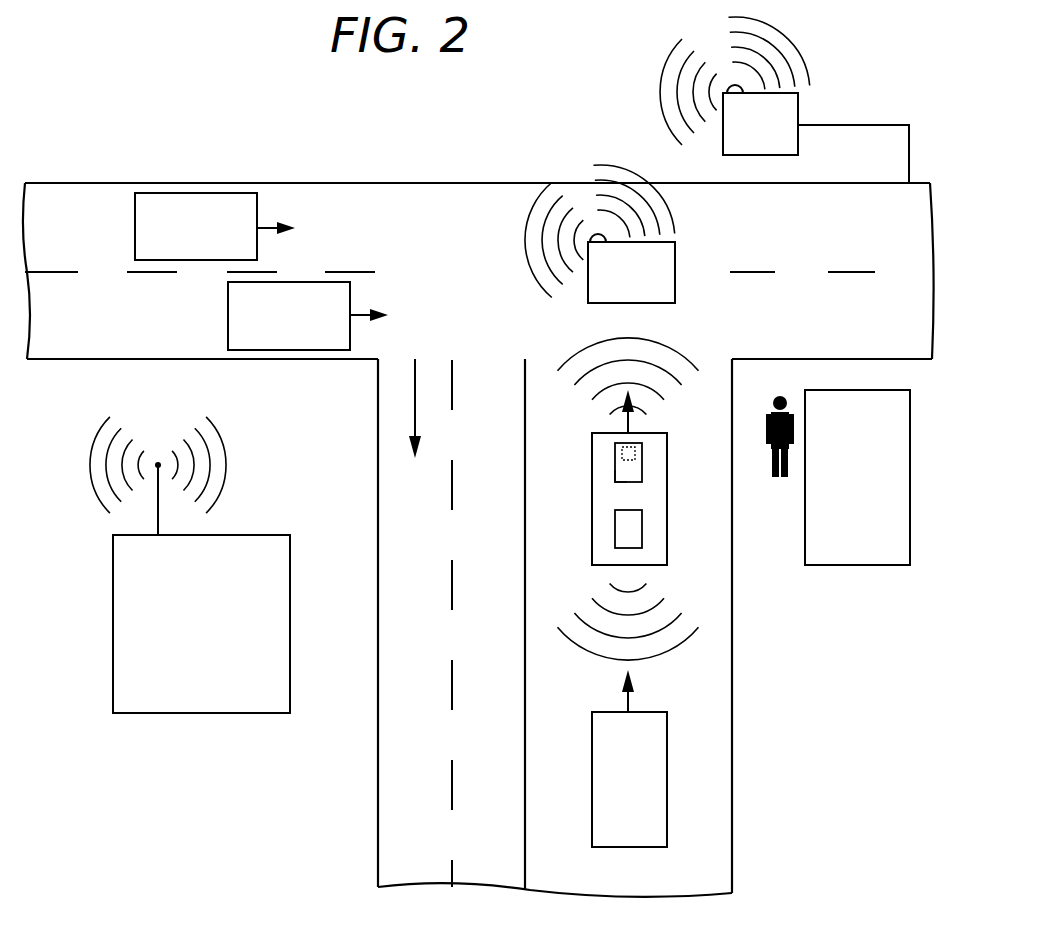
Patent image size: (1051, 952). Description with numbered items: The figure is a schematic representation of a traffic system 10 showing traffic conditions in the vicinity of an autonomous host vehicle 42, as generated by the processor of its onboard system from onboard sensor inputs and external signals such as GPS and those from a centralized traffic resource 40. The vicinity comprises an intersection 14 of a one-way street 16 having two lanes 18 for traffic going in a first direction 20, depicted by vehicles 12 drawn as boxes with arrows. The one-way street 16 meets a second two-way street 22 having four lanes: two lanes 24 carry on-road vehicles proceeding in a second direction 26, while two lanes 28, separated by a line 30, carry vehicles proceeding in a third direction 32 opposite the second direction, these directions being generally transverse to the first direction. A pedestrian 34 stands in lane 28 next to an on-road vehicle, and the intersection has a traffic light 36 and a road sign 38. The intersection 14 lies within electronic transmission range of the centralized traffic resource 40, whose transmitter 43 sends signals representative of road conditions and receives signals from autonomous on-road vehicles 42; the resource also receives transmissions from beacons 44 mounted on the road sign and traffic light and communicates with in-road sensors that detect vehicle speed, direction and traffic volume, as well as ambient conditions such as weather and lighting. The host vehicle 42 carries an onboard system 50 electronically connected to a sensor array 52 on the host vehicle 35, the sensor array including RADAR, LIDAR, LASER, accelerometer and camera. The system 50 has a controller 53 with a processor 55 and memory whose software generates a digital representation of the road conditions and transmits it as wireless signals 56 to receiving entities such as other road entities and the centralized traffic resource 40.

The traffic system 10 is at (246, 128).
The vehicle 12 is at (243, 318).
The intersection 14 is at (512, 303).
The one-way street 16 is at (353, 200).
The lanes 18 is at (68, 200).
The first direction 20 is at (360, 315).
The second two-way street 22 is at (345, 427).
The lanes 24 is at (378, 782).
The second direction 26 is at (418, 415).
The lanes 28 is at (555, 768).
The line 30 is at (530, 613).
The third direction 32 is at (632, 705).
The pedestrian 34 is at (770, 448).
The host vehicle 35 is at (848, 535).
The traffic light 36 is at (677, 258).
The road sign 38 is at (800, 105).
The centralized traffic resource 40 is at (293, 588).
The host vehicle 42 is at (640, 500).
The transmitter 43 is at (160, 520).
The beacons 44 is at (597, 233).
The onboard system 50 is at (640, 463).
The sensor array 52 is at (630, 530).
The controller 53 is at (618, 475).
The processor 55 is at (628, 450).
The wireless signal 56 is at (676, 352).